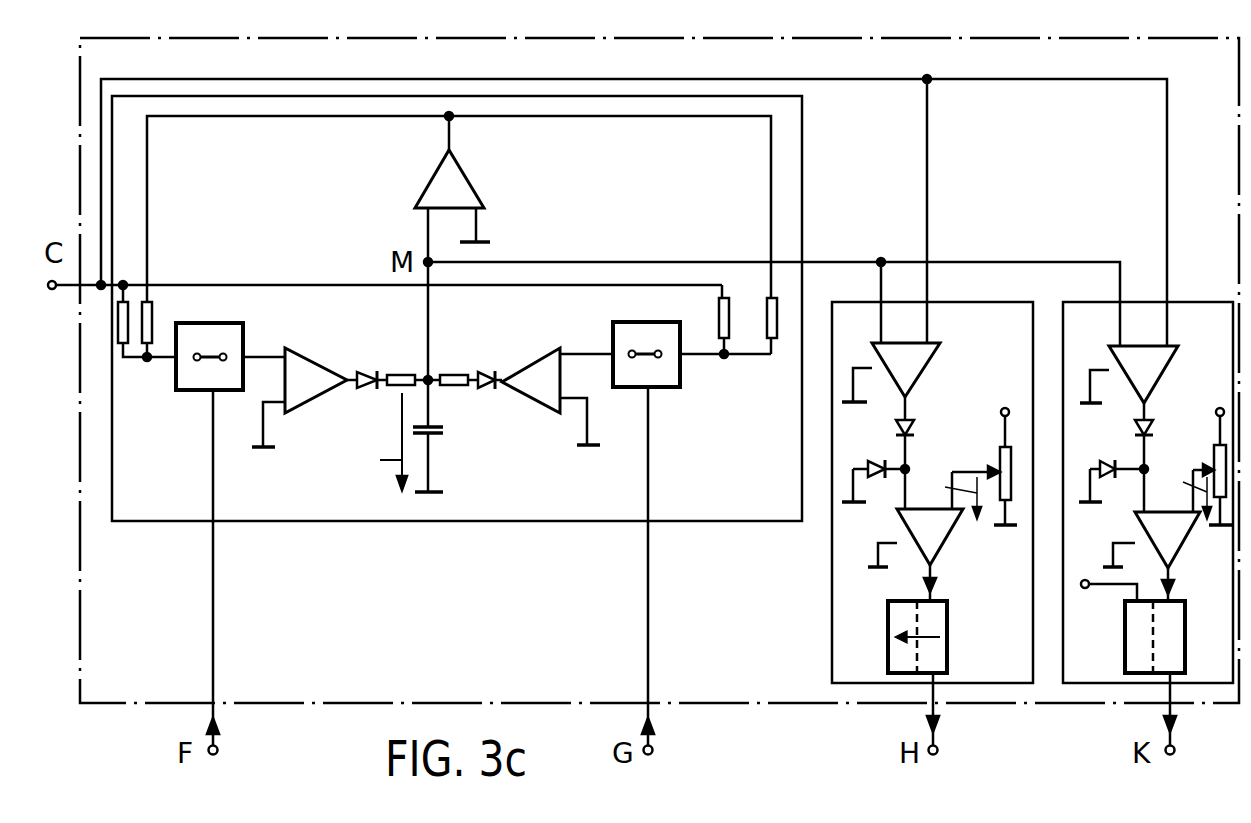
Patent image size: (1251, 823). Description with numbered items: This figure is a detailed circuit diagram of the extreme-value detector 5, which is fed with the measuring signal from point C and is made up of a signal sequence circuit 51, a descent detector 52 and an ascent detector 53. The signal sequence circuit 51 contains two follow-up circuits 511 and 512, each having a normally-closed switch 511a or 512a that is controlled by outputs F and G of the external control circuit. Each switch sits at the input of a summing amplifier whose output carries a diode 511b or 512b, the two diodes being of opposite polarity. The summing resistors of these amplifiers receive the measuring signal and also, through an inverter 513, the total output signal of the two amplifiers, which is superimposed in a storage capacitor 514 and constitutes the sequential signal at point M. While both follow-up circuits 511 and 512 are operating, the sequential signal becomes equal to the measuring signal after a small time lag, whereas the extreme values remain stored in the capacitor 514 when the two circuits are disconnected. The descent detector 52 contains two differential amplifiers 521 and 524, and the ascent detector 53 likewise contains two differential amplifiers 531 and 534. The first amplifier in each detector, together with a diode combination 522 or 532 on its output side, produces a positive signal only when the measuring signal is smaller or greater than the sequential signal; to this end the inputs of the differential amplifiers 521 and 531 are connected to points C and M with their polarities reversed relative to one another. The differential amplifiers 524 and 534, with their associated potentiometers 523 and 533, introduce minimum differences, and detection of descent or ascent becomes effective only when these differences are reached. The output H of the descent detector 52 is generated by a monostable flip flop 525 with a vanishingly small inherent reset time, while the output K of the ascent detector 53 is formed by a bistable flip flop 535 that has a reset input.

The extreme-value detector 5 is at (317, 703).
The signal sequence circuit 51 is at (518, 522).
The follow-up circuit 511 is at (369, 345).
The normally-closed switch 511a is at (180, 391).
The diode 511b is at (368, 391).
The follow-up circuit 512 is at (518, 346).
The normally-closed switch 512a is at (682, 390).
The diode 512b is at (484, 392).
The inverter 513 is at (468, 188).
The storage capacitor 514 is at (444, 433).
The descent detector 52 is at (865, 683).
The differential amplifier 521 is at (930, 359).
The diode combination 522 is at (882, 443).
The potentiometer 523 is at (1001, 462).
The differential amplifier 524 is at (943, 547).
The monostable flip flop 525 is at (947, 641).
The ascent detector 53 is at (1098, 683).
The differential amplifier 531 is at (1168, 360).
The diode combination 532 is at (1113, 442).
The potentiometer 533 is at (1213, 463).
The differential amplifier 534 is at (1183, 553).
The bistable flip flop 535 is at (1125, 611).